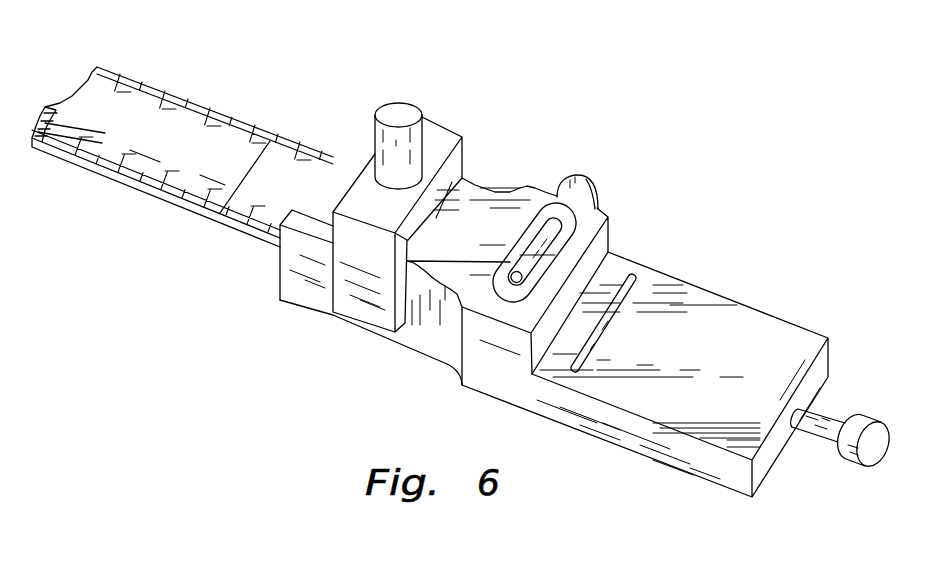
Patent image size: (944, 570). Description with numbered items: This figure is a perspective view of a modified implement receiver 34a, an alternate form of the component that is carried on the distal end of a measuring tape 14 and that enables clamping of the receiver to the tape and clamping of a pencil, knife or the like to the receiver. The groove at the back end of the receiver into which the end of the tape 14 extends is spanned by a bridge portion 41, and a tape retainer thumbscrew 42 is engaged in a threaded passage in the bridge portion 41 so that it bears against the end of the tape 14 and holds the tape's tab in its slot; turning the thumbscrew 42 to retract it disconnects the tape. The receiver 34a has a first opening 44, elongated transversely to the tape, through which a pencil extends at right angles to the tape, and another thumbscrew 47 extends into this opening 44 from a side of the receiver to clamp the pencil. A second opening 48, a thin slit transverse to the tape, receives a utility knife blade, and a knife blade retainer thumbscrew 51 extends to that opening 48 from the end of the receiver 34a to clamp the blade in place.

The measuring tape 14 is at (167, 92).
The implement receiver 34a is at (590, 82).
The bridge portion 41 is at (375, 313).
The tape retainer thumbscrew 42 is at (411, 102).
The first opening 44 is at (532, 247).
The thumbscrew 47 is at (585, 177).
The second opening 48 is at (599, 329).
The knife blade retainer thumbscrew 51 is at (847, 468).